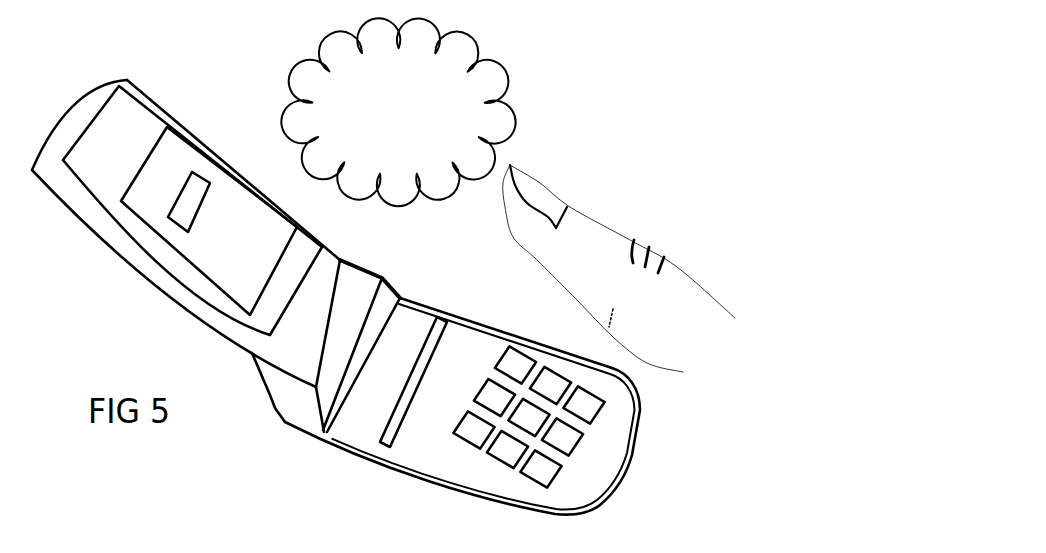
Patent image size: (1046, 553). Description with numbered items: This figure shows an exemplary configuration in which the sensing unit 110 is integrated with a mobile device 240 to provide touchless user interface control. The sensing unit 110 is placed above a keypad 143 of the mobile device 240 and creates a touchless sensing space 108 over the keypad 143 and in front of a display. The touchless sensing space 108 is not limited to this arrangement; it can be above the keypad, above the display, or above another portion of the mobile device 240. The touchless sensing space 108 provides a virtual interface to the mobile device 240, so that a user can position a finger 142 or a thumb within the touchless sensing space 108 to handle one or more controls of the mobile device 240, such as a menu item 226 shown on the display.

The touchless sensing space 108 is at (505, 87).
The sensing unit 110 is at (409, 407).
The finger 142 is at (678, 268).
The keypad 143 is at (506, 360).
The menu item 226 is at (196, 217).
The mobile device 240 is at (732, 47).